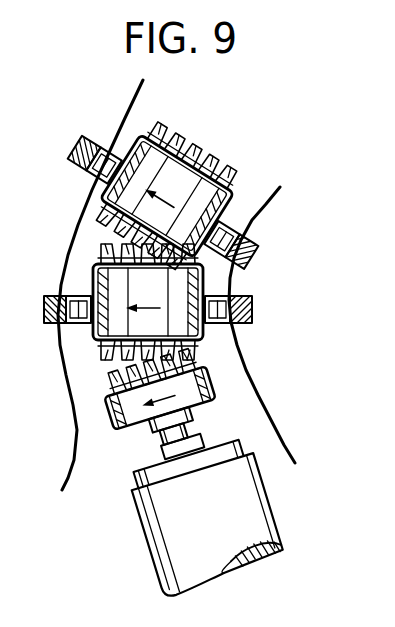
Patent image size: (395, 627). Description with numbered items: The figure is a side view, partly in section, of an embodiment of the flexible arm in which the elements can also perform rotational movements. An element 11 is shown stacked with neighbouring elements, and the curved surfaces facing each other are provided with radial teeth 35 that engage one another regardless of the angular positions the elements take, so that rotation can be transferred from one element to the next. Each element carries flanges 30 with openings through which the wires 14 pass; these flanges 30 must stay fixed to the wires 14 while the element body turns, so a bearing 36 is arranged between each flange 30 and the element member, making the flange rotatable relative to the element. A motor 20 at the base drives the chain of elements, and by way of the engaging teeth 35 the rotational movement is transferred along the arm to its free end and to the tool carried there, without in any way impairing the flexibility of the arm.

The element 11 is at (173, 327).
The wire 14 is at (71, 397).
The motor 20 is at (153, 529).
The flange 30 is at (80, 151).
The radial teeth 35 is at (227, 190).
The bearing 36 is at (90, 173).